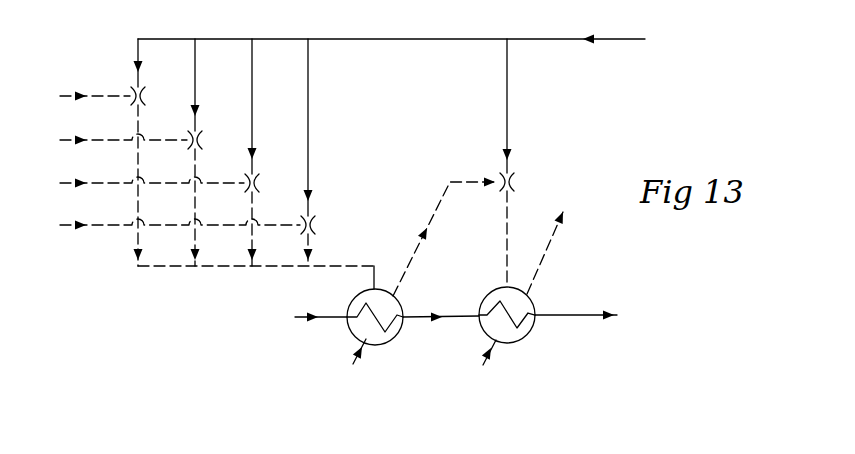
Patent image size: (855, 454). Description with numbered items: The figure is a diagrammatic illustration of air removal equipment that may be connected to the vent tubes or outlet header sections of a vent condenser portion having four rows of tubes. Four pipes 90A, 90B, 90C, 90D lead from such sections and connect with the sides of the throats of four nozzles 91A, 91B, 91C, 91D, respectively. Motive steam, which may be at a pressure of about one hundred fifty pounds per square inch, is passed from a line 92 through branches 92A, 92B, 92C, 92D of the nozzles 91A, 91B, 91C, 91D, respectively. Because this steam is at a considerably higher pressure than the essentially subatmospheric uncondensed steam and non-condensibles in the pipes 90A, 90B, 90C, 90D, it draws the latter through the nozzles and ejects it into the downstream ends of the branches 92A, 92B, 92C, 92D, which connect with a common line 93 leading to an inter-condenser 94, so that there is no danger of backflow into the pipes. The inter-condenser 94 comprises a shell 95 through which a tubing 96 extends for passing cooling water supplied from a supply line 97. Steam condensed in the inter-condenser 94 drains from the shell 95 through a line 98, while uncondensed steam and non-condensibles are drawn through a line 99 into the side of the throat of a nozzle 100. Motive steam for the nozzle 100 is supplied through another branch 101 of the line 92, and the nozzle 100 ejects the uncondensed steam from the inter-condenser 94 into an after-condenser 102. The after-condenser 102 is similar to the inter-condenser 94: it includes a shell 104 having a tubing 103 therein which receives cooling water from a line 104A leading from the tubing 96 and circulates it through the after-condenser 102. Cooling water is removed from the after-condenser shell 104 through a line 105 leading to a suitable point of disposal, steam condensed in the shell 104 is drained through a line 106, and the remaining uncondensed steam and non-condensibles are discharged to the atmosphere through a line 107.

The line 92 is at (376, 40).
The branch 92D is at (138, 55).
The branch 92C is at (196, 72).
The branch 92B is at (253, 94).
The branch 92A is at (309, 121).
The nozzle 91D is at (146, 92).
The nozzle 91C is at (205, 129).
The nozzle 91B is at (259, 187).
The nozzle 91A is at (316, 224).
The pipe 90D is at (103, 98).
The pipe 90C is at (103, 142).
The pipe 90B is at (103, 185).
The pipe 90A is at (103, 227).
The common line 93 is at (208, 267).
The inter-condenser 94 is at (397, 297).
The supply line 97 is at (333, 319).
The line 104A is at (452, 318).
The tubing 96 is at (356, 296).
The shell 95 is at (386, 344).
The line 98 is at (354, 356).
The line 99 is at (416, 238).
The nozzle 100 is at (515, 178).
The branch 101 is at (508, 90).
The after-condenser 102 is at (495, 291).
The shell 104 is at (529, 296).
The line 105 is at (580, 317).
The tubing 103 is at (524, 338).
The line 106 is at (498, 360).
The line 107 is at (548, 236).